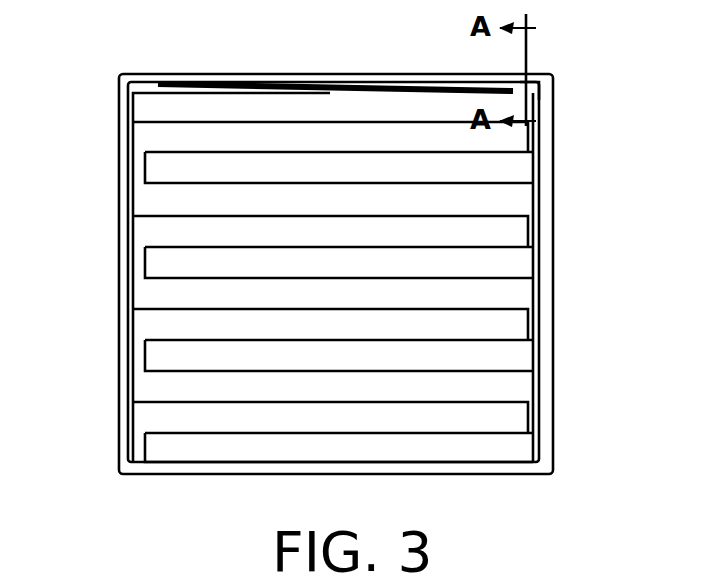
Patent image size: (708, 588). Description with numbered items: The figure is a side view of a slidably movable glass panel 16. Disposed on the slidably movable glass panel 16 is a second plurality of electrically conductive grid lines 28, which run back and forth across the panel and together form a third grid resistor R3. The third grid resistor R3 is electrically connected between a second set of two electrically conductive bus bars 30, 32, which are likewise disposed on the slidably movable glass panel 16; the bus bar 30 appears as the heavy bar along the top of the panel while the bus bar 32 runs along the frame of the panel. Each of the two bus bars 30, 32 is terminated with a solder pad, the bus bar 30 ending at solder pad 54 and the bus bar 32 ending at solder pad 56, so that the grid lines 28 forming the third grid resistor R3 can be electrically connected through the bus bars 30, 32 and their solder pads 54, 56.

The slidably movable glass panel 16 is at (573, 56).
The solder pad 56 is at (128, 93).
The electrically conductive bus bar 32 is at (157, 94).
The electrically conductive bus bar 30 is at (337, 79).
The solder pad 54 is at (547, 84).
The electrically conductive grid lines 28 is at (494, 297).
The third grid resistor R3 is at (181, 318).